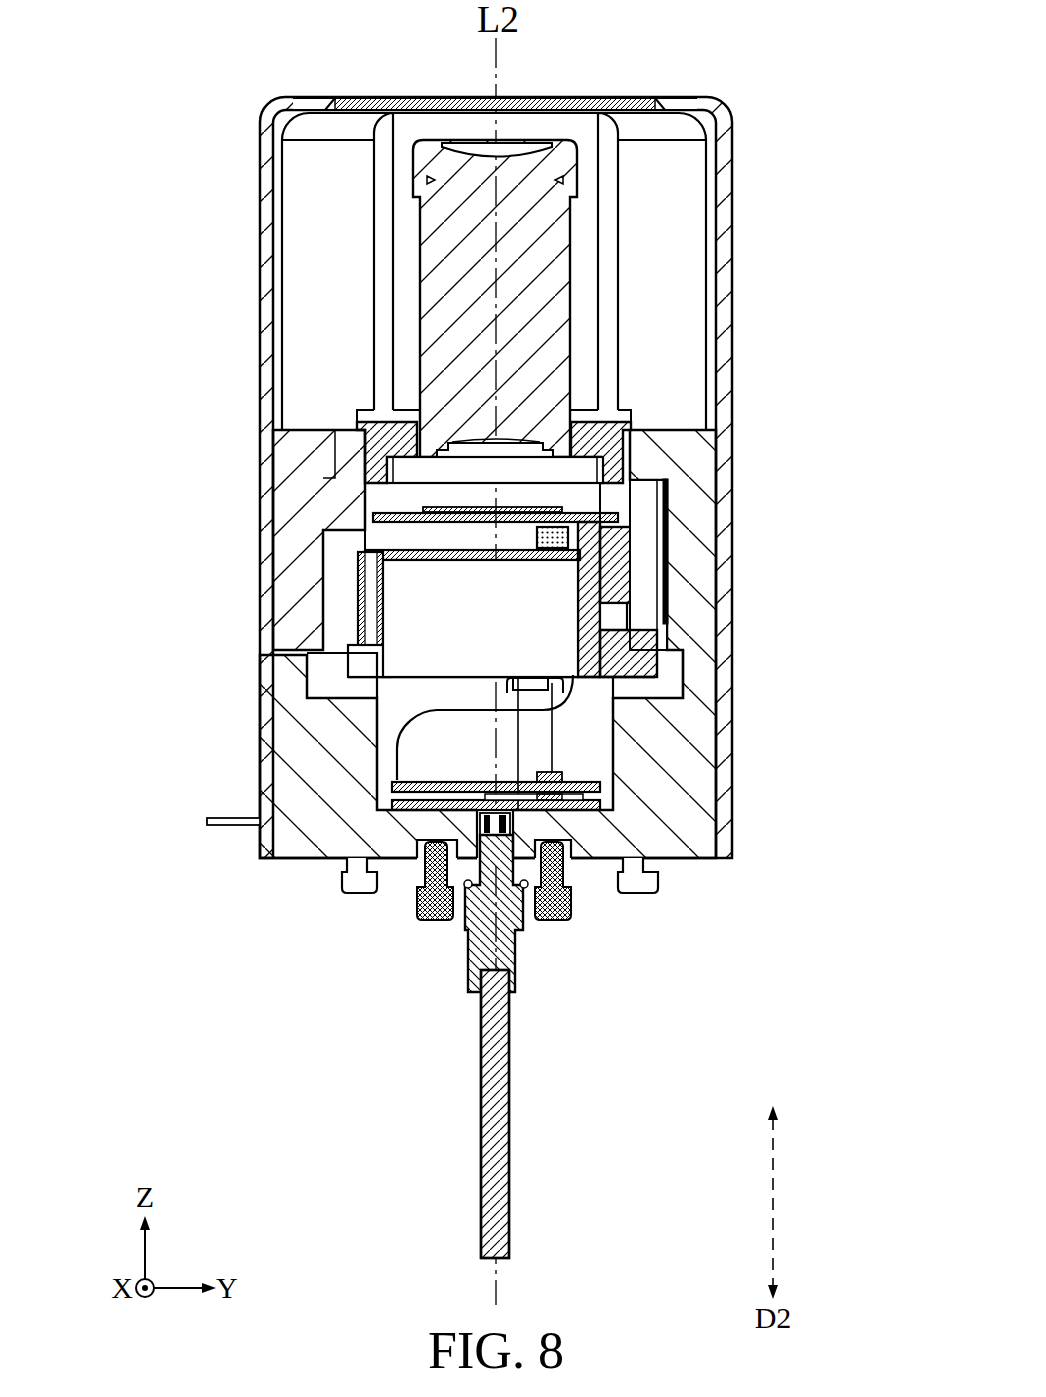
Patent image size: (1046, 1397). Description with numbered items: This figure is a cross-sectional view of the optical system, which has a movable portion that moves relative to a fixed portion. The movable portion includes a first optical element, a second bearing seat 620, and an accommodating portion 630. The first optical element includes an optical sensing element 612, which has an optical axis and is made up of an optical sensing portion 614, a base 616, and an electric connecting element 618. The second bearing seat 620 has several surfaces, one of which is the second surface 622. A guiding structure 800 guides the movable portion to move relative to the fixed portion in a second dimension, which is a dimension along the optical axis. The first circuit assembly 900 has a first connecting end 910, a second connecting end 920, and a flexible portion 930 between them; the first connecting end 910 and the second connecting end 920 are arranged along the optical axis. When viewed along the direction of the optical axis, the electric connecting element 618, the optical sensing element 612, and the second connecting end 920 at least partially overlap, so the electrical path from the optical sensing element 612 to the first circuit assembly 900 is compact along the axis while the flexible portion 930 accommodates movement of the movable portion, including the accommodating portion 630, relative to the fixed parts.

The optical sensing element 612 is at (580, 503).
The optical sensing portion 614 is at (527, 508).
The base 616 is at (668, 482).
The electric connecting element 618 is at (605, 524).
The second connecting end 920 is at (660, 540).
The guiding structure 800 is at (640, 580).
The second surface 622 is at (600, 618).
The second bearing seat 620 is at (657, 667).
The flexible portion 930 is at (555, 690).
The accommodating portion 630 is at (428, 640).
The first circuit assembly 900 is at (395, 728).
The first connecting end 910 is at (392, 779).